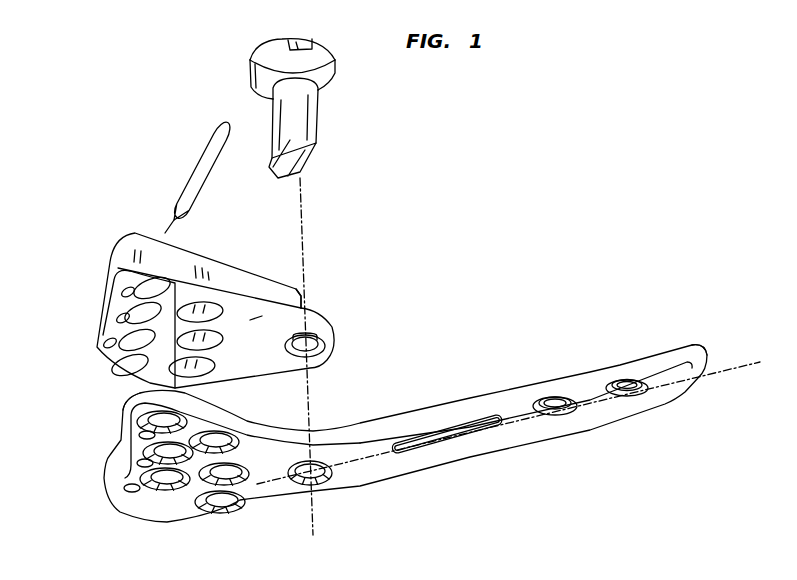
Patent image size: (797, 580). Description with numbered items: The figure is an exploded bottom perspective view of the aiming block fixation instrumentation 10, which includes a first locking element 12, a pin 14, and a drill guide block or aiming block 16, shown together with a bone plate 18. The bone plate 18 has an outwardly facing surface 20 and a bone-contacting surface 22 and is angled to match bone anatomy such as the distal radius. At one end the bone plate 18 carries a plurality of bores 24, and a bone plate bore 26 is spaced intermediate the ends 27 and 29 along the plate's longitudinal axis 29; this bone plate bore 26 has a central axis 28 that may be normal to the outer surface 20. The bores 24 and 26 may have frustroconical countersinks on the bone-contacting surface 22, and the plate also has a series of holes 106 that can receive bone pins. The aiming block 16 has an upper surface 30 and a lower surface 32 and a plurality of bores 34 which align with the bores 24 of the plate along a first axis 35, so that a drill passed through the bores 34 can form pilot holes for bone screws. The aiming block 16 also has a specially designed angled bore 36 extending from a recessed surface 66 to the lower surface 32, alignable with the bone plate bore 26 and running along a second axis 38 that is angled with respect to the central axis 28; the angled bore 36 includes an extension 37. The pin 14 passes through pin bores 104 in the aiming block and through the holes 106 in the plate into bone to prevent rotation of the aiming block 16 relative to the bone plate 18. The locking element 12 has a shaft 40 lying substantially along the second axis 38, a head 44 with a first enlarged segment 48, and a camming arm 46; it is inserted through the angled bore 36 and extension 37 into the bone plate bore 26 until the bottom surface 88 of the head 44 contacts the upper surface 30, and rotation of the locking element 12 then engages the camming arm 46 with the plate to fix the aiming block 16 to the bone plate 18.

The instrumentation 10 is at (89, 160).
The first locking element 12 is at (240, 47).
The pin 14 is at (201, 160).
The aiming block 16 is at (277, 272).
The bone plate 18 is at (344, 426).
The outwardly facing surface 20 is at (516, 398).
The bone-contacting surface 22 is at (535, 428).
The bores 24 is at (213, 510).
The bone plate bore 26 is at (322, 490).
The end 27 is at (123, 410).
The central axis 28 is at (307, 528).
The end 29 is at (704, 348).
The upper surface 30 is at (228, 258).
The lower surface 32 is at (262, 316).
The bores 34 is at (127, 372).
The first axis 35 is at (163, 228).
The angled bore 36 is at (328, 345).
The extension 37 is at (313, 337).
The second axis 38 is at (303, 214).
The locking element shaft 40 is at (302, 124).
The head 44 is at (304, 44).
The camming arm 46 is at (279, 172).
The first enlarged segment 48 is at (334, 62).
The recessed surface 66 is at (304, 307).
The bottom surface 88 is at (320, 80).
The pin bores 104 is at (108, 343).
The holes 106 is at (125, 488).